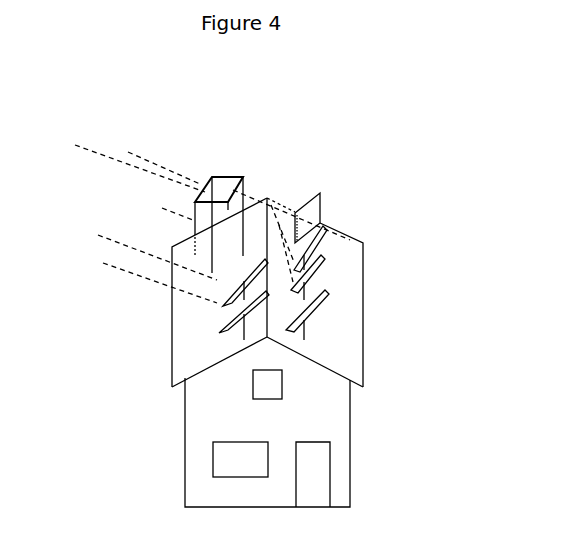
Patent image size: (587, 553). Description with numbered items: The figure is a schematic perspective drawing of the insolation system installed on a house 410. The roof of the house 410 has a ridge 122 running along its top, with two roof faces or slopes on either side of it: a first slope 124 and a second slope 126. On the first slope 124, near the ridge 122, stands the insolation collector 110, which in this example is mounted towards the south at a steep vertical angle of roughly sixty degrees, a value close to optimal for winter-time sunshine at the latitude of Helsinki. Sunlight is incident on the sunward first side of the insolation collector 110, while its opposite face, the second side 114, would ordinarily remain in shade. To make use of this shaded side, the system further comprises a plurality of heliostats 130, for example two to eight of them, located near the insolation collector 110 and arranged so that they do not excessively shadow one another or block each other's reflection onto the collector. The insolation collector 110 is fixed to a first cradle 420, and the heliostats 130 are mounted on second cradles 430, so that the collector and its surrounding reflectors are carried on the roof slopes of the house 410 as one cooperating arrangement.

The insolation collector 110 is at (218, 177).
The second side 114 is at (232, 175).
The ridge 122 is at (272, 338).
The first slope 124 is at (192, 360).
The second slope 126 is at (335, 358).
The heliostats 130 is at (320, 303).
The house 410 is at (350, 458).
The first cradle 420 is at (205, 231).
The second cradles 430 is at (247, 338).